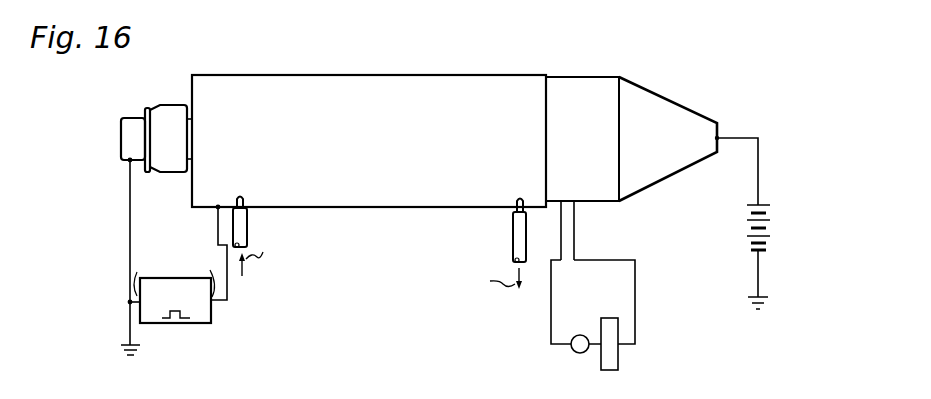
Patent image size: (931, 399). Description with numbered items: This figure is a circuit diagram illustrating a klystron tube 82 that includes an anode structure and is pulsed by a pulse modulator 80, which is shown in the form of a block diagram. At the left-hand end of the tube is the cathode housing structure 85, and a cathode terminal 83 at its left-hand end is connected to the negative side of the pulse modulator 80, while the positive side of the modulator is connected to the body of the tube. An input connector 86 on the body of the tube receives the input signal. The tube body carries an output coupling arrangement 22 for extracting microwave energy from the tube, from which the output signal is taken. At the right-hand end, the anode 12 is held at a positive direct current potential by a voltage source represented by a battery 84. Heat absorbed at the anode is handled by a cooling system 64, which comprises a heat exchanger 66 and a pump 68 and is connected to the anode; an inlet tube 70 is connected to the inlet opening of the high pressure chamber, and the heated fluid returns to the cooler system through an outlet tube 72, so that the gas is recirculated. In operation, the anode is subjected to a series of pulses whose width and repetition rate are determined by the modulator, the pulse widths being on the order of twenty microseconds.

The anode 12 is at (681, 70).
The output coupling arrangement 22 is at (513, 233).
The cooling system 64 is at (635, 299).
The heat exchanger 66 is at (620, 365).
The pump 68 is at (583, 355).
The inlet tube 70 is at (576, 246).
The outlet tube 72 is at (560, 244).
The pulse modulator 80 is at (211, 312).
The klystron tube 82 is at (421, 63).
The cathode terminal 83 is at (133, 147).
The battery 84 is at (746, 224).
The cathode housing structure 85 is at (170, 112).
The input connector 86 is at (247, 229).